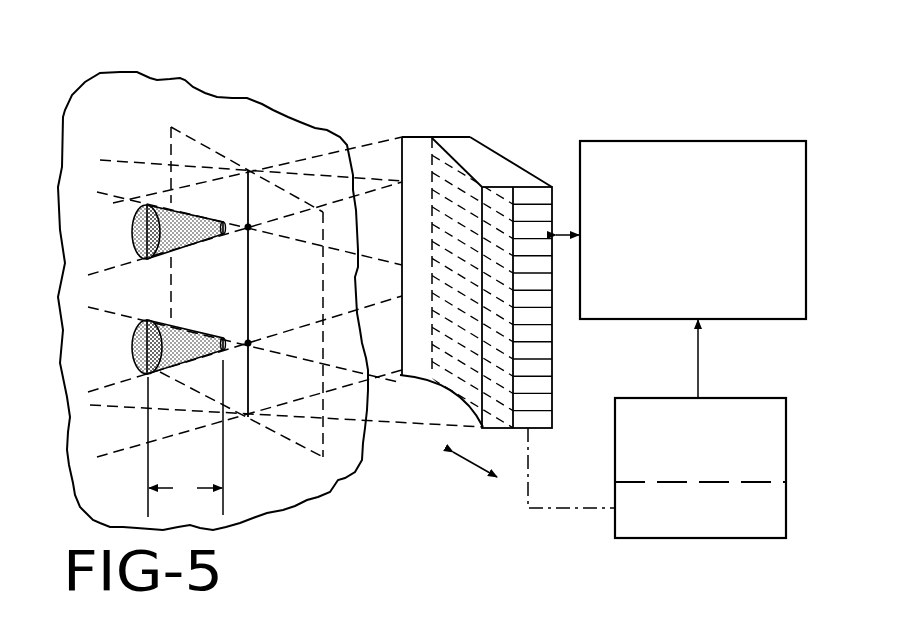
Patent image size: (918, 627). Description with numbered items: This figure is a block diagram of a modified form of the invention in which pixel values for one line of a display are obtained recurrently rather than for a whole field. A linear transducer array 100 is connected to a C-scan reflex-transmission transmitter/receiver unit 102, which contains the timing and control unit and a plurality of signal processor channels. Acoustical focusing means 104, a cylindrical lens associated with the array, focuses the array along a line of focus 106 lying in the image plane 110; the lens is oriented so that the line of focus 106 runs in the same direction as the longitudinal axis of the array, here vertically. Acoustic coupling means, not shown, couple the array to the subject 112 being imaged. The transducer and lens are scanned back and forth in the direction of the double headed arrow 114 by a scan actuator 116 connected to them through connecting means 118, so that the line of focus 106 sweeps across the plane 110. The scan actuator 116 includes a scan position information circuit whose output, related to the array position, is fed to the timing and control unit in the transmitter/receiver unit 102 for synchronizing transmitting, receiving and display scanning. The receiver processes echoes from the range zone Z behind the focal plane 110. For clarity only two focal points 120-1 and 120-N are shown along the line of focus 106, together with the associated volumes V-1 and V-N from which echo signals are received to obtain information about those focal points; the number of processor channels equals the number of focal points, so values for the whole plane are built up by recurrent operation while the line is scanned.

The linear transducer array 100 is at (490, 148).
The C-scan reflex-transmission transmitter/receiver unit 102 is at (688, 141).
The acoustical focusing means 104 is at (410, 137).
The line of focus 106 is at (250, 285).
The image plane 110 is at (168, 133).
The subject 112 is at (180, 78).
The double headed arrow 114 is at (480, 467).
The scan actuator 116 is at (743, 398).
The connecting means 118 is at (529, 508).
The focal point 120-1 is at (248, 232).
The focal point 120-N is at (248, 343).
The volume V-1 is at (133, 238).
The volume V-N is at (133, 353).
The range zone Z is at (185, 438).